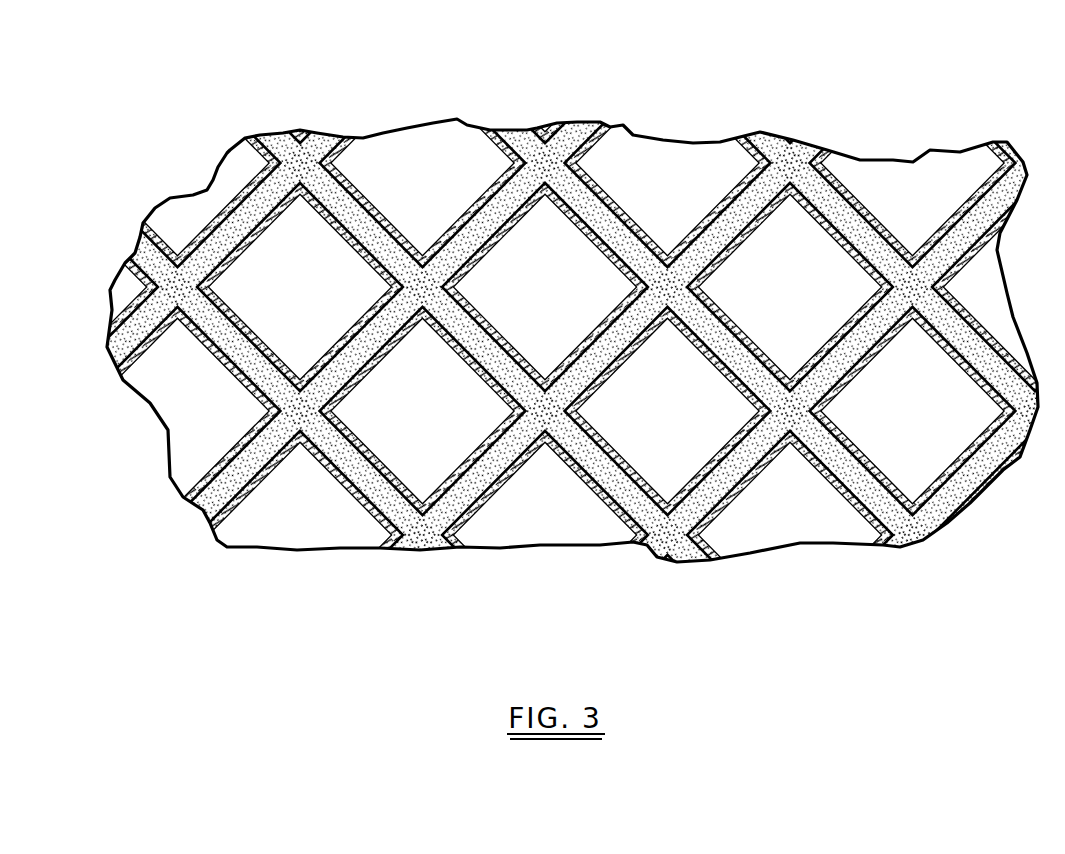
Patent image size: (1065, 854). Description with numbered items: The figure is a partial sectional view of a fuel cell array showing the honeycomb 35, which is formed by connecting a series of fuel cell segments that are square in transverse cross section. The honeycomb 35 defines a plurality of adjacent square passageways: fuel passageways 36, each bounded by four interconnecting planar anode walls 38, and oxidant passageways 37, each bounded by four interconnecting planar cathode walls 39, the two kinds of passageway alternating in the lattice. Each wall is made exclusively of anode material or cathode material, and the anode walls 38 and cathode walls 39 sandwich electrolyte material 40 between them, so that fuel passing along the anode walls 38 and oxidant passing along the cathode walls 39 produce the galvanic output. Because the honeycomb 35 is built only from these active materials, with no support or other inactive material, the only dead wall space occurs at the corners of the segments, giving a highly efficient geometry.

The honeycomb 35 is at (393, 100).
The fuel passageways 36 is at (416, 192).
The oxidant passageways 37 is at (276, 299).
The anode walls 38 is at (140, 338).
The cathode walls 39 is at (745, 243).
The electrolyte material 40 is at (325, 132).